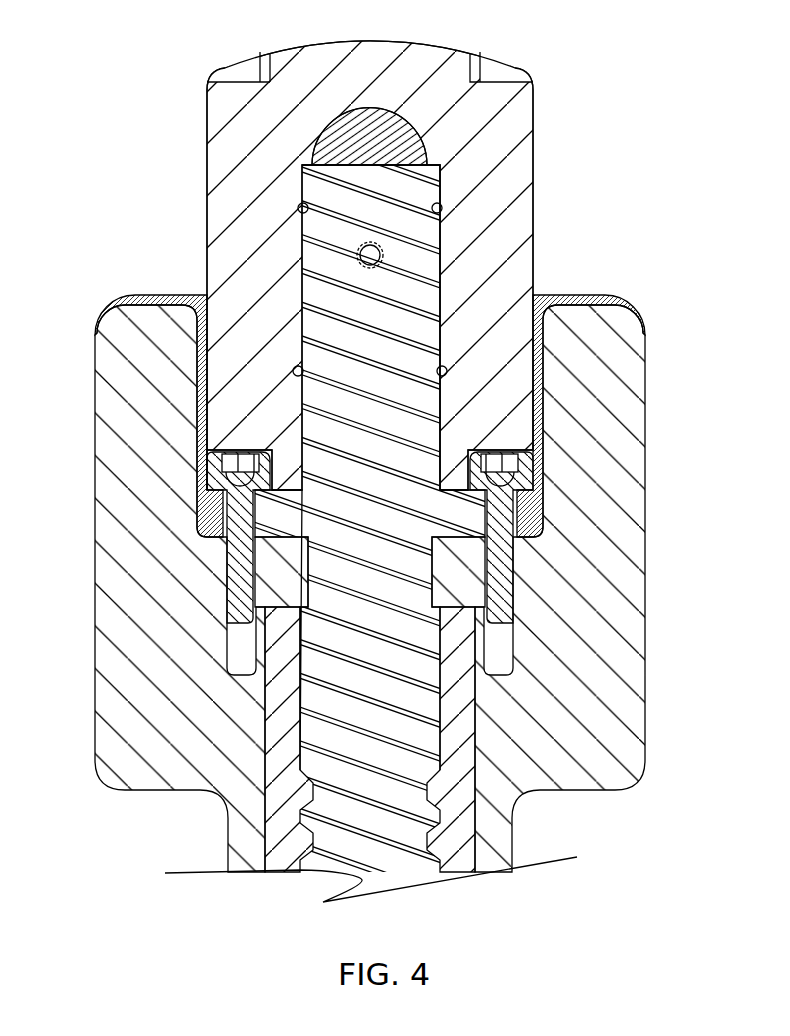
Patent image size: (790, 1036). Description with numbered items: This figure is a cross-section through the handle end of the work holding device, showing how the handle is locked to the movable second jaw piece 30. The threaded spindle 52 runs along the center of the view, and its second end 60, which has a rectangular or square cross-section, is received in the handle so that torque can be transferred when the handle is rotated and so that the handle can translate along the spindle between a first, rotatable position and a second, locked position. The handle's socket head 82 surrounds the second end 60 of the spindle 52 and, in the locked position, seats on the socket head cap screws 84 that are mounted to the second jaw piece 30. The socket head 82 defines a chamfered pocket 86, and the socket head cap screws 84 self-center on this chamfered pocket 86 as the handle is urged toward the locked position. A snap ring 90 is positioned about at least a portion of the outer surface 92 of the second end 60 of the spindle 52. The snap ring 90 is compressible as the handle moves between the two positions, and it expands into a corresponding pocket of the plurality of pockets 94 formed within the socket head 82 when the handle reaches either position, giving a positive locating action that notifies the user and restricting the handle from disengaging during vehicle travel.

The second jaw piece 30 is at (638, 455).
The spindle 52 is at (382, 702).
The second end 60 is at (443, 270).
The socket head 82 is at (435, 55).
The socket head cap screws 84 is at (240, 555).
The chamfered pocket 86 is at (280, 474).
The snap ring 90 is at (448, 201).
The outer surface 92 is at (452, 240).
The pockets 94 is at (443, 208).